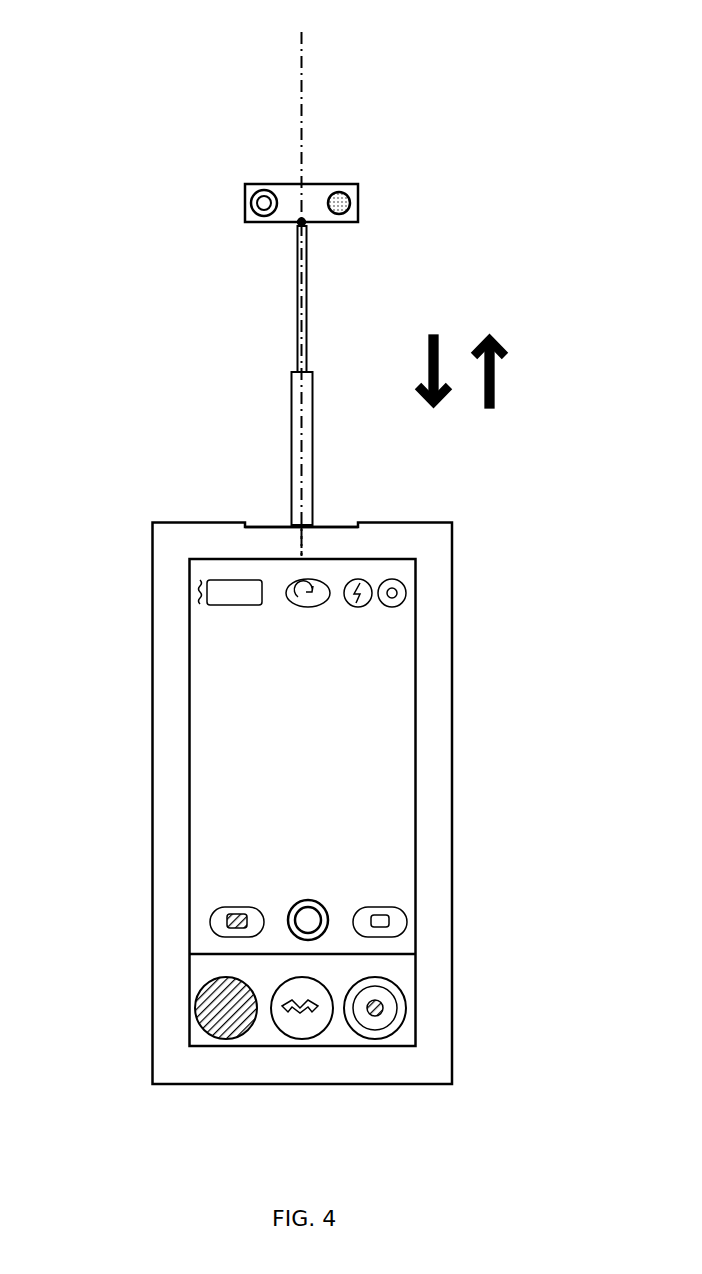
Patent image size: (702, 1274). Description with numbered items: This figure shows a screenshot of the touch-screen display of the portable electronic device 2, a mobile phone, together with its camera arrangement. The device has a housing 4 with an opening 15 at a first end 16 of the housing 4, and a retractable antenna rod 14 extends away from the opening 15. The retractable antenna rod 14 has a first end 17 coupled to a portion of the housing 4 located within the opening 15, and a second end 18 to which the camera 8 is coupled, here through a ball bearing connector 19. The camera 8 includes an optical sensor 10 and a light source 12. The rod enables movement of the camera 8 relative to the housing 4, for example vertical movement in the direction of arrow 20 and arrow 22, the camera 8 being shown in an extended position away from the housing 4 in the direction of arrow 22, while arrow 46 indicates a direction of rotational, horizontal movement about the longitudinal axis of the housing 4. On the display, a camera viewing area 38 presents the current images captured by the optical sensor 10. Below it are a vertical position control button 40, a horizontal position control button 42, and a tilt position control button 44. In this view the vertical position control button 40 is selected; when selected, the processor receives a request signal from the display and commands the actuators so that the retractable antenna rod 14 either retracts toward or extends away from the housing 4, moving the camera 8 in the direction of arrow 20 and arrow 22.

The portable electronic device 2 is at (102, 290).
The housing 4 is at (170, 822).
The camera 8 is at (300, 195).
The optical sensor 10 is at (263, 202).
The light source 12 is at (340, 200).
The retractable antenna rod 14 is at (300, 408).
The opening 15 is at (270, 525).
The first end 16 is at (188, 520).
The first end 17 is at (305, 520).
The second end 18 is at (305, 243).
The ball bearing connector 19 is at (300, 223).
The arrow 20 is at (430, 370).
The arrow 22 is at (492, 377).
The camera viewing area 38 is at (198, 672).
The vertical position control button 40 is at (227, 1008).
The horizontal position control button 42 is at (302, 1008).
The tilt position control button 44 is at (376, 1008).
The arrow 46 is at (300, 77).